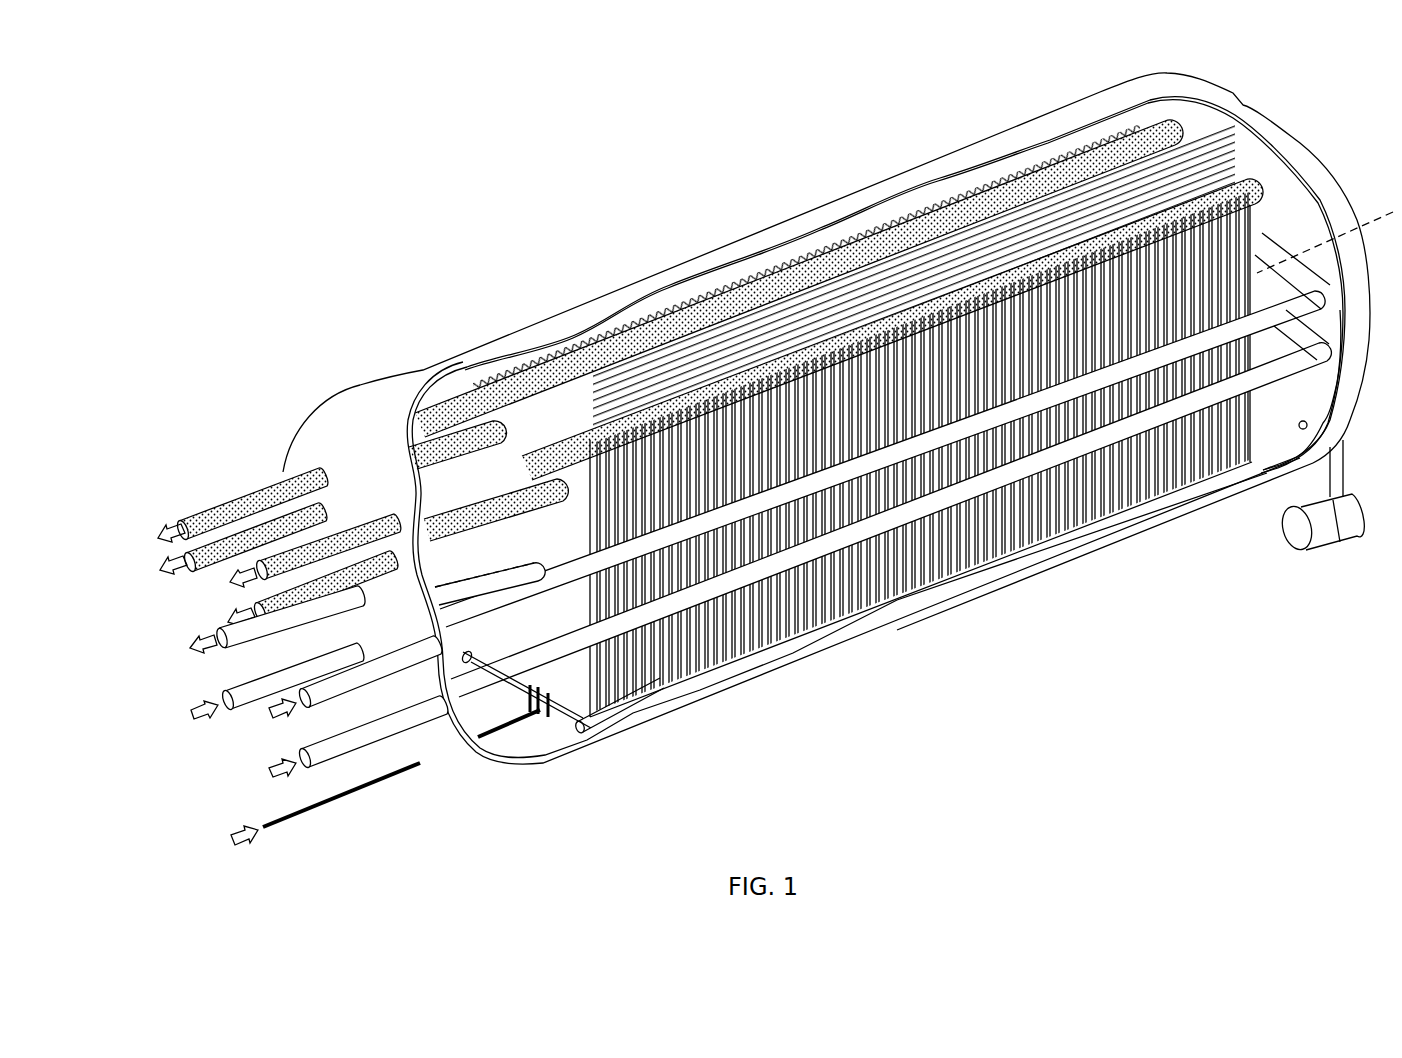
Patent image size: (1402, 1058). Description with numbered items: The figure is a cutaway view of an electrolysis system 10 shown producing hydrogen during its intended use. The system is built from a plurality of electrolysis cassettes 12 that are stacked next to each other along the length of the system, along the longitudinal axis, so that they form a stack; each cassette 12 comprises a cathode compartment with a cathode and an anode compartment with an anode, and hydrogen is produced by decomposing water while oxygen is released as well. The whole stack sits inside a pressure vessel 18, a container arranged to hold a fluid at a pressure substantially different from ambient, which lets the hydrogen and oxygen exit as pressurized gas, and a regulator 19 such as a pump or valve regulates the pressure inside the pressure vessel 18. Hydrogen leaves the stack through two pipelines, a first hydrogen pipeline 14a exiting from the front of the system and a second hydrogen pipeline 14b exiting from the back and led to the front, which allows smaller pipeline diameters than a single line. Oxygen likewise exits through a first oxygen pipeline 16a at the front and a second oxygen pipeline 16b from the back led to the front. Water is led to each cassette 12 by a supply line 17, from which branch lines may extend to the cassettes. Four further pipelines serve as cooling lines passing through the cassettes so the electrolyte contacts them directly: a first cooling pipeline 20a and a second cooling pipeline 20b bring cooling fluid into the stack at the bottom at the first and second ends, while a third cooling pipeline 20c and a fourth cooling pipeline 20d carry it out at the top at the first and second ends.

The electrolysis system 10 is at (74, 178).
The electrolysis cassette 12 is at (623, 677).
The first hydrogen pipeline 14a is at (220, 537).
The second hydrogen pipeline 14b is at (197, 513).
The first oxygen pipeline 16a is at (352, 575).
The second oxygen pipeline 16b is at (281, 553).
The supply line 17 is at (273, 823).
The pressure vessel 18 is at (417, 378).
The regulator 19 is at (1285, 500).
The first cooling pipeline 20a is at (327, 607).
The second cooling pipeline 20b is at (323, 700).
The third cooling pipeline 20c is at (433, 646).
The fourth cooling pipeline 20d is at (323, 663).